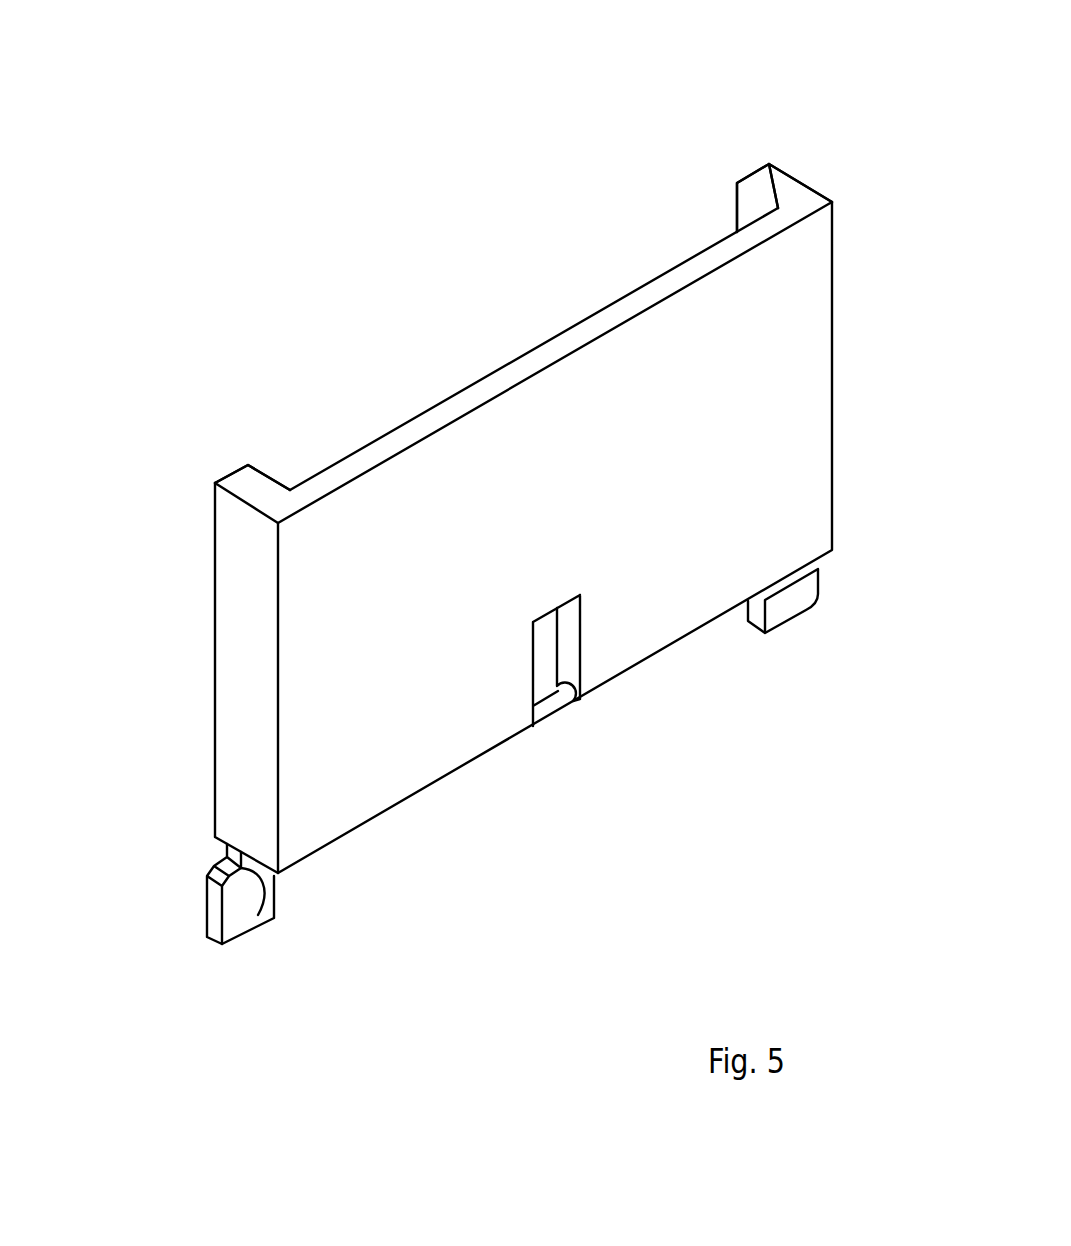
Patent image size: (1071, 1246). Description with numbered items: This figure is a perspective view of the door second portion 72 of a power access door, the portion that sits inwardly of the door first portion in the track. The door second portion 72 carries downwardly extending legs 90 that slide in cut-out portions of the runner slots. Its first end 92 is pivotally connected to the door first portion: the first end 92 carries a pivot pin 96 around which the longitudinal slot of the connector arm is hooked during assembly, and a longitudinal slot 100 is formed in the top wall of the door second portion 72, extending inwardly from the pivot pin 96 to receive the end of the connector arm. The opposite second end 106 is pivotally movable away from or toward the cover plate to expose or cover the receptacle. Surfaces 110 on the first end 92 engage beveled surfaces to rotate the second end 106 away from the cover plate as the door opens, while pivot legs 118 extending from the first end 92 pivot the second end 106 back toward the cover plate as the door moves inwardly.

The door second portion 72 is at (523, 518).
The downwardly extending legs 90 is at (740, 208).
The first end 92 is at (370, 777).
The pivot pin 96 is at (555, 702).
The longitudinal slot 100 is at (603, 660).
The second end 106 is at (563, 397).
The surfaces 110 is at (238, 908).
The pivot legs 118 is at (250, 917).